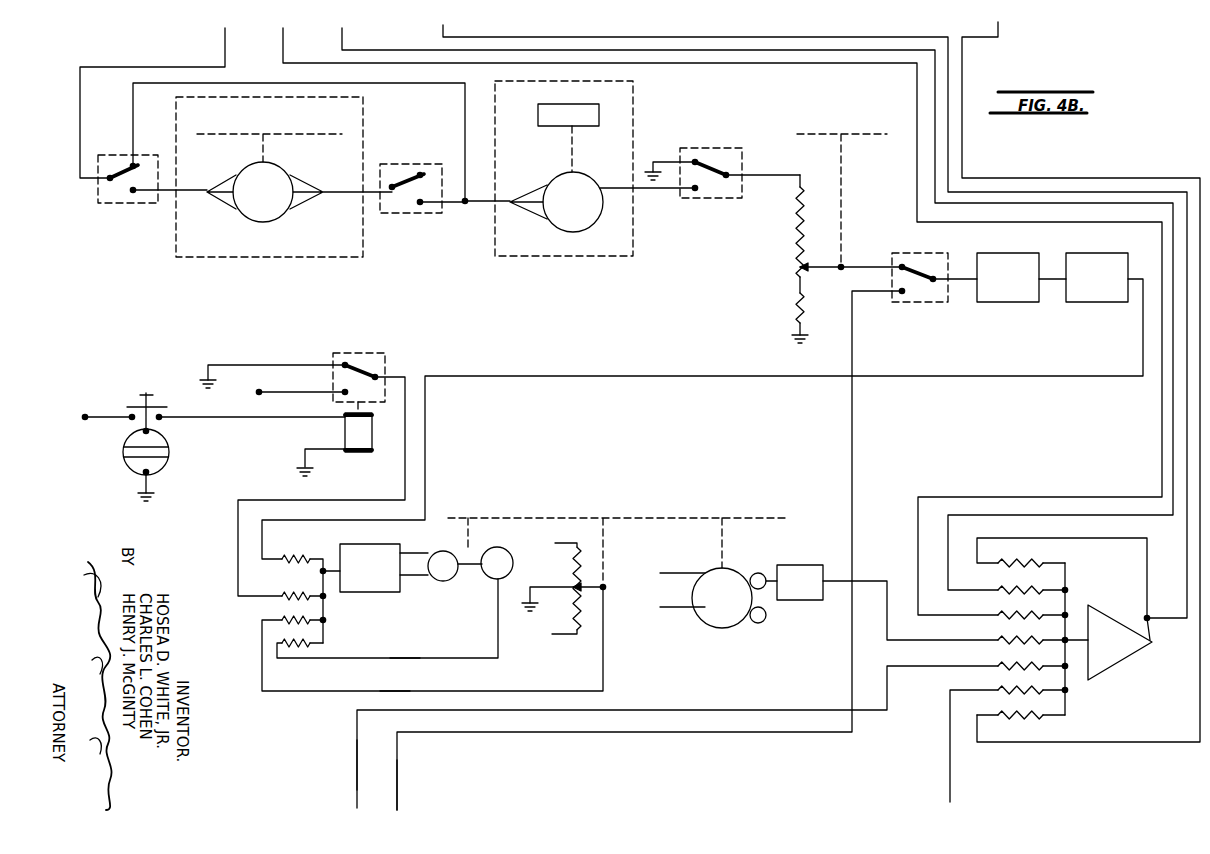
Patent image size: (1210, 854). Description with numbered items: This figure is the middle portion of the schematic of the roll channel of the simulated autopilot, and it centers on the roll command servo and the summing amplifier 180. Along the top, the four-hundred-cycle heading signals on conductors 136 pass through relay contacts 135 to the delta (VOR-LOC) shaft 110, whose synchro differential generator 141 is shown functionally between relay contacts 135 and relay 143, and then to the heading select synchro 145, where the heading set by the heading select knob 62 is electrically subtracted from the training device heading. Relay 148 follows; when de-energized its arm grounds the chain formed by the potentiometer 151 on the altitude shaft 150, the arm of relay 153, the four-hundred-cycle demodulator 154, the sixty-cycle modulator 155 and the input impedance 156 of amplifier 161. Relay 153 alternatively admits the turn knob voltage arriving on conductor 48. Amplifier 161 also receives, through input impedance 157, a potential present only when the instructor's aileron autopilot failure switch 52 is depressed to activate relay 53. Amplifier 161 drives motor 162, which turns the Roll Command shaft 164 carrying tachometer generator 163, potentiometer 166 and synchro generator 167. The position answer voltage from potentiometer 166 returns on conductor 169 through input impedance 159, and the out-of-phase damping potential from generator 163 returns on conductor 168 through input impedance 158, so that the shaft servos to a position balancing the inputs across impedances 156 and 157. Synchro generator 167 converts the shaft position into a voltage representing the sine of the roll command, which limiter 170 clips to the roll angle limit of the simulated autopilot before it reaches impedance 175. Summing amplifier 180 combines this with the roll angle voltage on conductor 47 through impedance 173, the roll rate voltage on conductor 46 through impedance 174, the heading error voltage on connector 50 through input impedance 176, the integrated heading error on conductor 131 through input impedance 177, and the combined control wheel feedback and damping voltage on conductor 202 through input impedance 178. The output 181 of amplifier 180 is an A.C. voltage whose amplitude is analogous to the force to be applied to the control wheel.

The conductors 136 is at (225, 44).
The conductor 46 is at (283, 50).
The conductor 47 is at (343, 45).
The output 181 is at (443, 36).
The conductor 202 is at (962, 128).
The relay contacts 135 is at (118, 153).
The delta (VOR-LOC) shaft 110 is at (279, 134).
The synchro differential generator 141 is at (277, 201).
The relay 143 is at (400, 163).
The heading select knob 62 is at (538, 112).
The heading select synchro 145 is at (587, 211).
The relay 148 is at (708, 147).
The altitude shaft 150 is at (857, 130).
The potentiometer 151 is at (798, 228).
The relay 153 is at (902, 252).
The 400 cycle demodulator 154 is at (1022, 287).
The 60 cycle modulator 155 is at (1111, 287).
The aileron autopilot failure switch 52 is at (147, 392).
The relay 53 is at (360, 452).
The input impedance 156 is at (287, 557).
The input impedance 157 is at (298, 592).
The input impedance 158 is at (282, 617).
The input impedance 159 is at (280, 642).
The amplifier 161 is at (383, 576).
The motor 162 is at (455, 574).
The tachometer generator 163 is at (509, 571).
The Roll Command shaft 164 is at (660, 517).
The potentiometer 166 is at (577, 627).
The synchro generator 167 is at (735, 570).
The conductor 168 is at (387, 658).
The conductor 169 is at (392, 691).
The limiter 170 is at (795, 565).
The impedance 173 is at (1007, 586).
The impedance 174 is at (1003, 611).
The impedance 175 is at (1005, 636).
The input impedance 176 is at (1005, 662).
The input impedance 177 is at (1004, 687).
The input impedance 178 is at (1033, 717).
The summing amplifier 180 is at (1135, 652).
The conductor 131 is at (951, 770).
The connector 50 is at (352, 764).
The conductor 48 is at (398, 780).